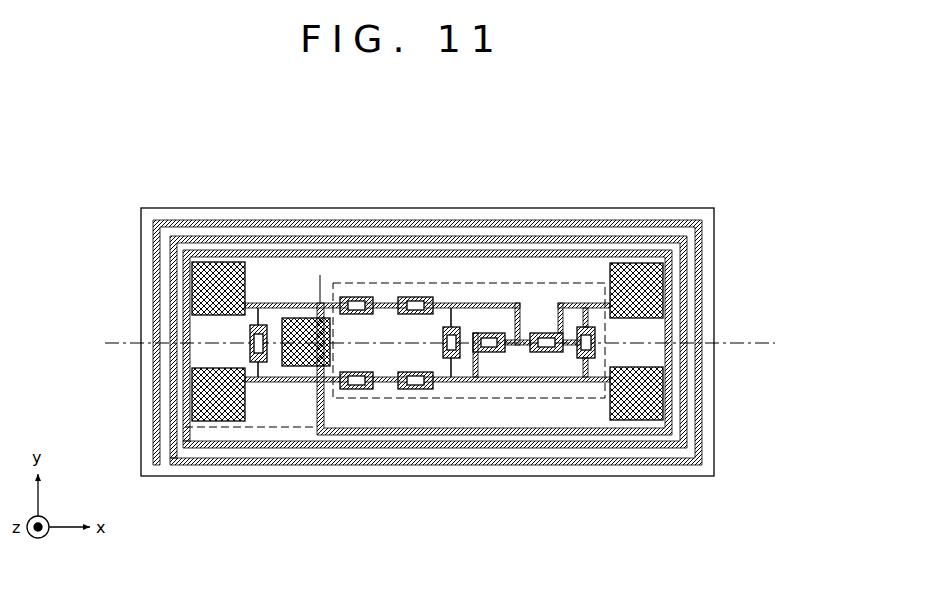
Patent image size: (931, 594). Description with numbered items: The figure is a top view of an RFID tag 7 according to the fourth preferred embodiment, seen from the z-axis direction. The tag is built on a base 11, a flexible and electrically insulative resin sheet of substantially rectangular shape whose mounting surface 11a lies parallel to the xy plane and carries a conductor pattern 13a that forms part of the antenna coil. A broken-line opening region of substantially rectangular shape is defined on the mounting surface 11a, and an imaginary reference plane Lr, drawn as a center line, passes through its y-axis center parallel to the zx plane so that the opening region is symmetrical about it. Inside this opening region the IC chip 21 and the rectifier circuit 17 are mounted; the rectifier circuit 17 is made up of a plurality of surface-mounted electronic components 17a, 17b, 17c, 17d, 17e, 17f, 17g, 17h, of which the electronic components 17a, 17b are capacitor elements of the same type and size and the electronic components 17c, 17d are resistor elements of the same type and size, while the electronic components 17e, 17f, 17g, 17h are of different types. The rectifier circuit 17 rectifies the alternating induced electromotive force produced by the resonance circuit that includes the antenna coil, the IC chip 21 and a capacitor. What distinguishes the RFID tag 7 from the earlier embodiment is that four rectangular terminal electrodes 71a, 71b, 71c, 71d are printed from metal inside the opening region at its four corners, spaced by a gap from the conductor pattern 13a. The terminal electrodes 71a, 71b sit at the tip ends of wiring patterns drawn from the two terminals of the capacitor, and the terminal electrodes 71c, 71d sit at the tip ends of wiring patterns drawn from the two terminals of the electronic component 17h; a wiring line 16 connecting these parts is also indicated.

The RFID tag 7 is at (123, 152).
The base 11 is at (733, 225).
The mounting surface 11a is at (598, 268).
The conductor pattern 13a is at (269, 219).
The wiring line 16 is at (269, 381).
The rectifier circuit 17 is at (427, 360).
The electronic component 17a is at (357, 297).
The electronic component 17b is at (357, 389).
The electronic component 17c is at (418, 297).
The electronic component 17d is at (415, 389).
The electronic component 17e is at (451, 358).
The electronic component 17f is at (505, 352).
The electronic component 17g is at (548, 352).
The electronic component 17h is at (595, 358).
The IC chip 21 is at (302, 316).
The terminal electrode 71a is at (193, 385).
The terminal electrode 71b is at (193, 303).
The terminal electrode 71c is at (663, 385).
The terminal electrode 71d is at (663, 304).
The reference plane Lr is at (453, 344).